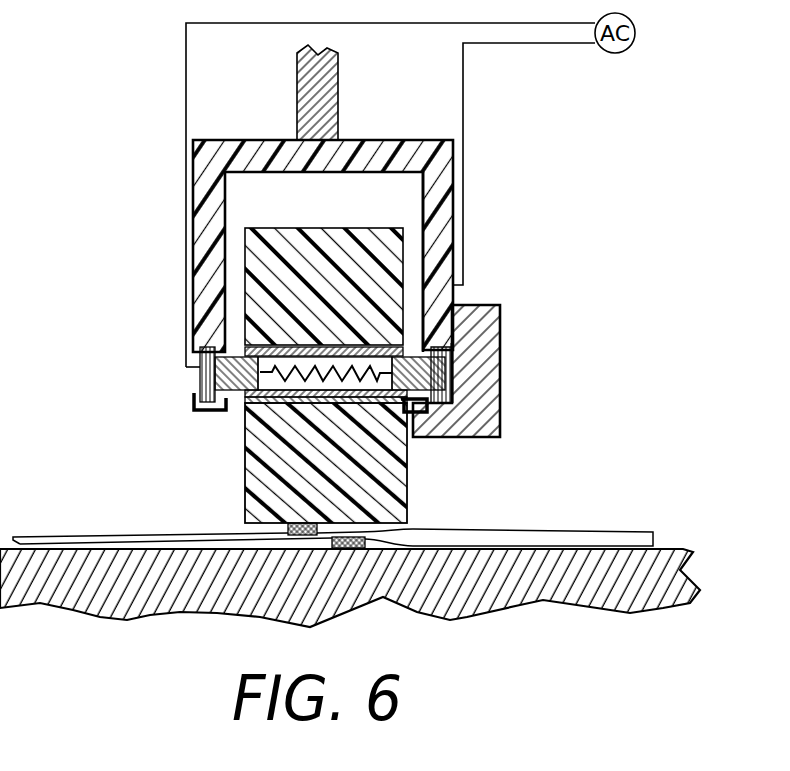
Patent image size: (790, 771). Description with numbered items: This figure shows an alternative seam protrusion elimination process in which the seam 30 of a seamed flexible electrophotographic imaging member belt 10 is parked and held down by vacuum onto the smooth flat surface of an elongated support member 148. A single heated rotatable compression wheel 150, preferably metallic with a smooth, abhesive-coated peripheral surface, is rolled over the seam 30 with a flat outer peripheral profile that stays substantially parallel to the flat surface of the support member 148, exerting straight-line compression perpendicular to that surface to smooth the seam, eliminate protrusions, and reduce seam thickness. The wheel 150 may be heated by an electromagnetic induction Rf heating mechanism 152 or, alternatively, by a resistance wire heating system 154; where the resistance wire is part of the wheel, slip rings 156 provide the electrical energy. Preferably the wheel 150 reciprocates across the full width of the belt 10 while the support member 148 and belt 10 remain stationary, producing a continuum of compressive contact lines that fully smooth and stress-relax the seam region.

The belt 10 is at (538, 533).
The seam 30 is at (287, 533).
The support member 148 is at (684, 549).
The compression wheel 150 is at (360, 228).
The electromagnetic induction Rf heating mechanism 152 is at (500, 326).
The resistance wire heating system 154 is at (298, 398).
The slip rings 156 is at (200, 408).